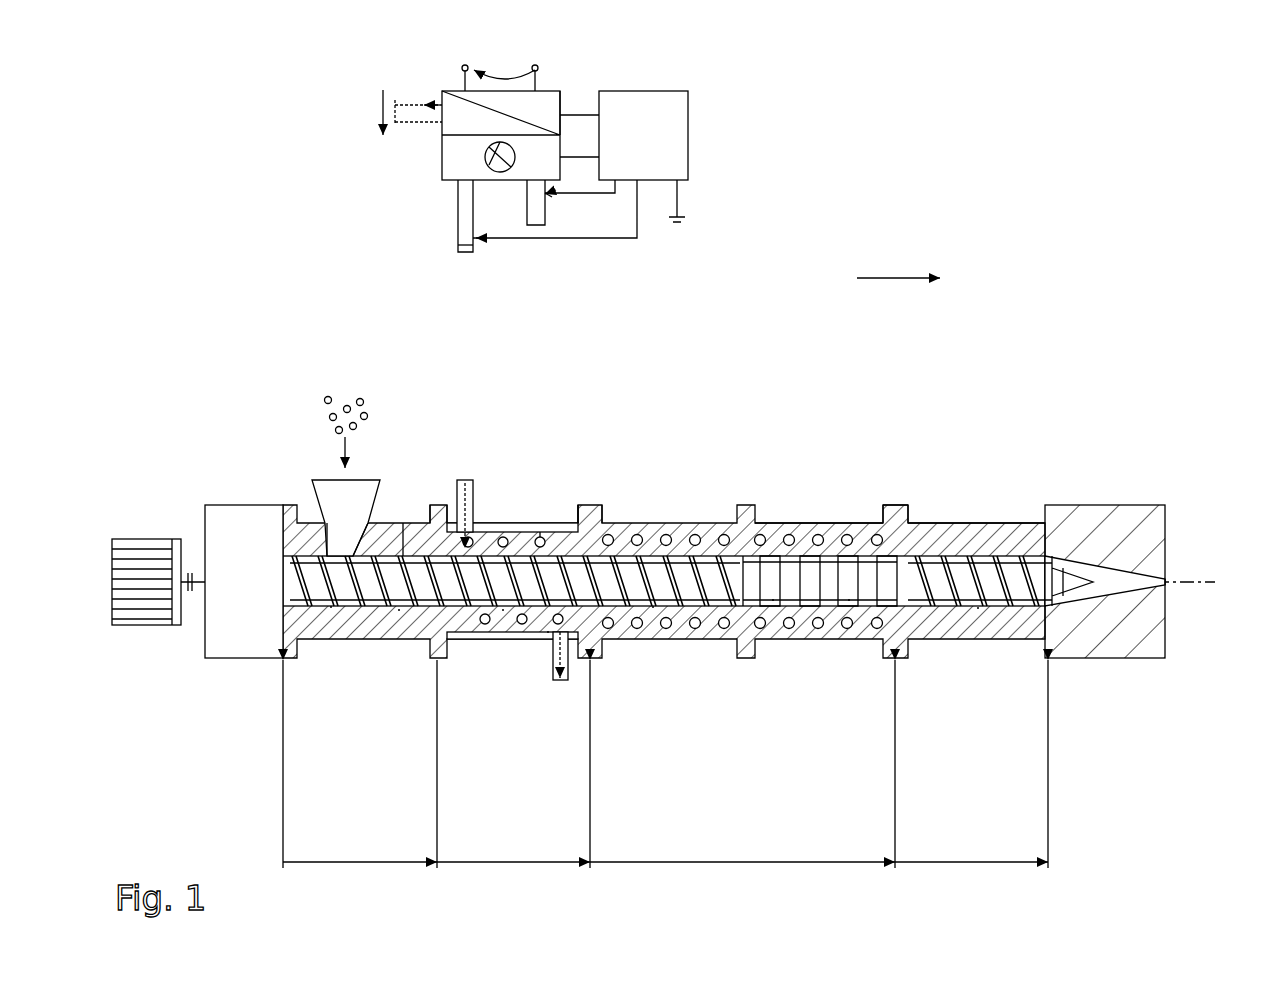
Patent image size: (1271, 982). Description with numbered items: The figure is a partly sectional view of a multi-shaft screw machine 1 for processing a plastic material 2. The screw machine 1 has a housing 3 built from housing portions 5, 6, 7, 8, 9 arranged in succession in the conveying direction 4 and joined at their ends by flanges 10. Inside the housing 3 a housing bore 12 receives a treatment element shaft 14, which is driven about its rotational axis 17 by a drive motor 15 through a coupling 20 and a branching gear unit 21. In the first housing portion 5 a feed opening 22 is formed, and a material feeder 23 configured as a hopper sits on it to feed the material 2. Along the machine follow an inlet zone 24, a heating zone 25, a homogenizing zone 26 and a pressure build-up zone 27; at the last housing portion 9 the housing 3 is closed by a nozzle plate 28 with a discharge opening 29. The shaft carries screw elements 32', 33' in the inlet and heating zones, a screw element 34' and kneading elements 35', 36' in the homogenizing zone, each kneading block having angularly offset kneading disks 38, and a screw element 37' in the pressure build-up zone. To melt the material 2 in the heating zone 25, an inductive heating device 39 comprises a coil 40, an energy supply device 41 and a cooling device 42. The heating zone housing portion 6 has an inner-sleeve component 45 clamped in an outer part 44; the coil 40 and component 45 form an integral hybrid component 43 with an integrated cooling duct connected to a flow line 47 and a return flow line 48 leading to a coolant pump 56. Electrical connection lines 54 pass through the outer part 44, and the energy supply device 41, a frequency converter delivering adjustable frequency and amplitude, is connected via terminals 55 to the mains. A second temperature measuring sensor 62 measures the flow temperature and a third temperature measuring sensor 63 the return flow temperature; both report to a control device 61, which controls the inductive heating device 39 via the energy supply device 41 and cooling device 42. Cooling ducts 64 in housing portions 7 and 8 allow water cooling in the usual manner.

The screw machine 1 is at (758, 305).
The material to be processed 2 is at (345, 405).
The housing 3 is at (837, 523).
The conveying direction 4 is at (895, 277).
The first housing portion 5 is at (403, 533).
The heating zone housing portion 6 is at (540, 527).
The housing portion 7 is at (805, 520).
The housing portion 8 is at (856, 523).
The last housing portion 9 is at (1018, 523).
The flanges 10 is at (437, 503).
The housing bore 12 is at (336, 610).
The treatment element shaft 14 is at (1007, 608).
The drive motor 15 is at (142, 539).
The rotational axis 17 is at (398, 610).
The coupling 20 is at (190, 572).
The branching gear unit 21 is at (242, 505).
The feed opening 22 is at (353, 547).
The material feeder 23 is at (325, 480).
The inlet zone 24 is at (360, 764).
The heating zone 25 is at (513, 764).
The homogenizing zone 26 is at (742, 764).
The pressure build-up zone 27 is at (971, 764).
The nozzle plate 28 is at (1100, 505).
The discharge opening 29 is at (1162, 505).
The screw element 32' is at (311, 673).
The screw element 33' is at (496, 675).
The screw element 34' is at (636, 673).
The kneading element 35' is at (756, 669).
The kneading element 36' is at (870, 669).
The screw element 37' is at (961, 674).
The kneading disks 38 is at (790, 600).
The inductive heating device 39 is at (548, 84).
The coil 40 is at (572, 524).
The energy supply device 41 is at (565, 98).
The cooling device 42 is at (440, 160).
The hybrid component 43 is at (547, 634).
The outer part 44 is at (557, 527).
The component 45 is at (475, 639).
The flow line 47 is at (518, 518).
The return flow line 48 is at (556, 682).
The electrical connection lines 54 is at (405, 122).
The terminals 55 is at (464, 65).
The coolant pump 56 is at (490, 165).
The control device 61 is at (688, 115).
The second temperature measuring sensor 62 is at (490, 234).
The third temperature measuring sensor 63 is at (552, 199).
The cooling ducts 64 is at (890, 523).